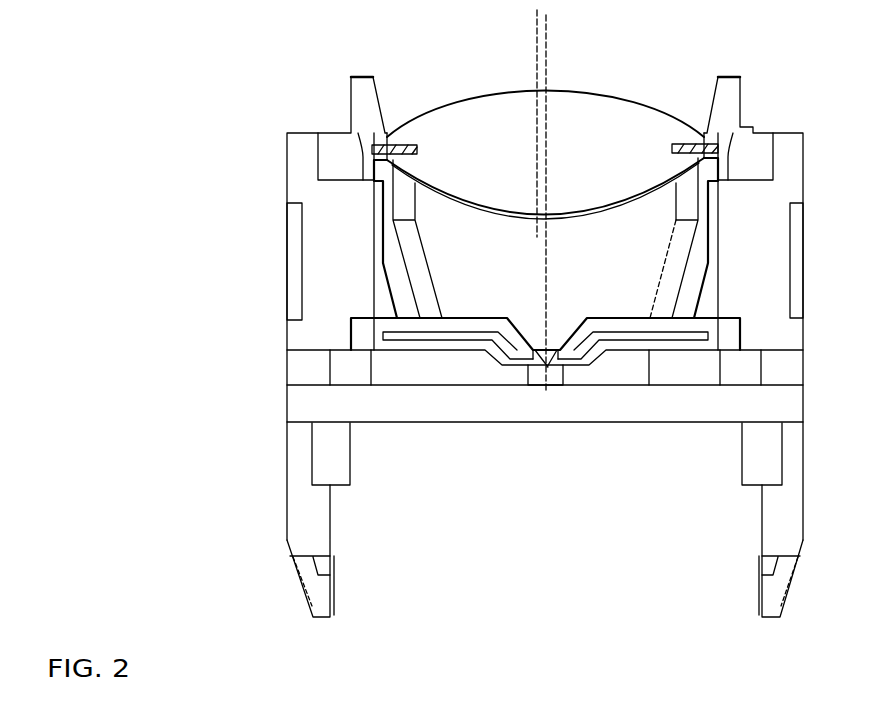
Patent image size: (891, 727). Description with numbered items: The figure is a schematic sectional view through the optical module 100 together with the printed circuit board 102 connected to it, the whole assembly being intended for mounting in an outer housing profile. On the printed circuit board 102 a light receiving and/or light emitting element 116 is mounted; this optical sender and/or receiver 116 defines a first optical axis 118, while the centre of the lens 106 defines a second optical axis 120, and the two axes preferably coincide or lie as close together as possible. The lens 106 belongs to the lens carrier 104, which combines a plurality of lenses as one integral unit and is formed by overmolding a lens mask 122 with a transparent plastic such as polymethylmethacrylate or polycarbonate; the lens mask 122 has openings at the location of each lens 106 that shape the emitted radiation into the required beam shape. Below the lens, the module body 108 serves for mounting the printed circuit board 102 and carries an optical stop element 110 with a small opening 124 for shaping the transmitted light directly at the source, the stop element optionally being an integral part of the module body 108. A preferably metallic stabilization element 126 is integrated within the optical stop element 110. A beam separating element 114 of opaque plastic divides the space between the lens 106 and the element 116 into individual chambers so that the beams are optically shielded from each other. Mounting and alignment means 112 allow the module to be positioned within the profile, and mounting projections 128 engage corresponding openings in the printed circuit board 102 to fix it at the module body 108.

The optical module 100 is at (808, 156).
The printed circuit board 102 is at (650, 412).
The lens carrier 104 is at (362, 162).
The lens 106 is at (605, 120).
The module body 108 is at (795, 331).
The optical stop element 110 is at (475, 325).
The mounting and alignment means 112 is at (797, 521).
The beam separating element 114 is at (677, 208).
The light receiving and/or light emitting element 116 is at (532, 378).
The first optical axis 118 is at (556, 31).
The second optical axis 120 is at (527, 12).
The lens mask 122 is at (398, 147).
The small opening 124 is at (551, 368).
The stabilization element 126 is at (398, 340).
The mounting projections 128 is at (323, 464).